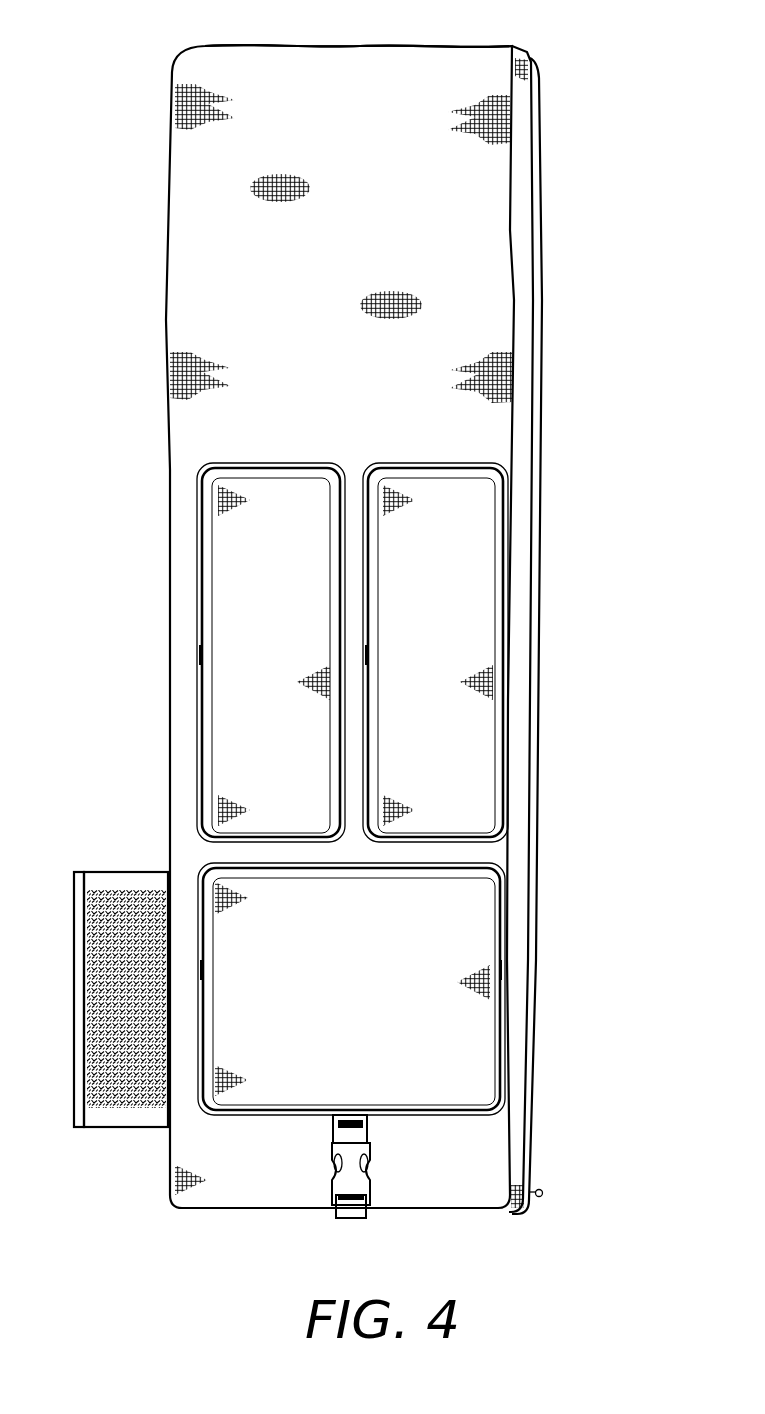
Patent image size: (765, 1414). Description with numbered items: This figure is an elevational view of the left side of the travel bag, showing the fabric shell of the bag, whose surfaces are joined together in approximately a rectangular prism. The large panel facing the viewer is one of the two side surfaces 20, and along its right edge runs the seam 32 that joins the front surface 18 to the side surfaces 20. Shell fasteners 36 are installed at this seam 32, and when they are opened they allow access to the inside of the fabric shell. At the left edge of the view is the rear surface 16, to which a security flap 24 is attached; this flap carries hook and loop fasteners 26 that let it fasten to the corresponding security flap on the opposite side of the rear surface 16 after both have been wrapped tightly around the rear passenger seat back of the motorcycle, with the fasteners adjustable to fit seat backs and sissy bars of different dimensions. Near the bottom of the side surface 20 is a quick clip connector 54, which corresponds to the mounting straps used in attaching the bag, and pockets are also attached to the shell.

The rear surface 16 is at (168, 300).
The front surface 18 is at (545, 333).
The side surface 20 is at (272, 70).
The security flap 24 is at (95, 1027).
The hook and loop fastener 26 is at (100, 1012).
The seam 32 is at (540, 1024).
The shell fastener 36 is at (543, 1197).
The quick clip connector 54 is at (353, 1180).